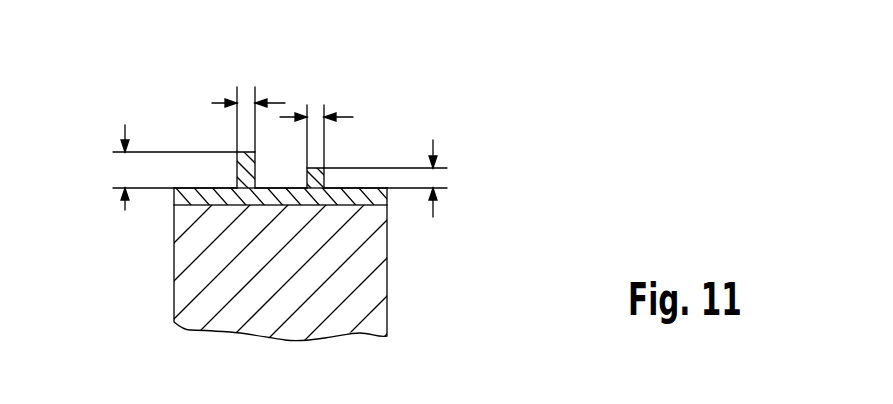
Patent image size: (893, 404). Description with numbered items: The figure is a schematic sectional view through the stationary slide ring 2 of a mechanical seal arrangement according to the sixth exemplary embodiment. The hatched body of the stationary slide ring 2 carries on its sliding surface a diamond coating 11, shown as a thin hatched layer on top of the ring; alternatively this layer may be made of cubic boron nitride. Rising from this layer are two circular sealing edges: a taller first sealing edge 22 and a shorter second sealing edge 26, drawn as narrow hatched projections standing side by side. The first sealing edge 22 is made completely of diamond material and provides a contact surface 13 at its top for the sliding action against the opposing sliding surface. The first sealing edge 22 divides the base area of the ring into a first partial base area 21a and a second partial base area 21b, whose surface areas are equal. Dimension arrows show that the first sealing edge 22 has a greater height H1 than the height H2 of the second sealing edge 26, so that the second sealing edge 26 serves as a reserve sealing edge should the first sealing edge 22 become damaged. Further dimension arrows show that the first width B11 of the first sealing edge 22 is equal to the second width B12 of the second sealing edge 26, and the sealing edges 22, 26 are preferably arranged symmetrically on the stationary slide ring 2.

The stationary slide ring 2 is at (380, 293).
The diamond coating 11 is at (381, 197).
The contact surface 13 is at (250, 93).
The first sealing edge 22 is at (242, 167).
The second sealing edge 26 is at (313, 177).
The first partial base area 21a is at (362, 187).
The second partial base area 21b is at (197, 187).
The first width B11 is at (243, 95).
The second width B12 is at (315, 113).
The height of the first sealing edge H1 is at (128, 172).
The height of the second sealing edge H2 is at (435, 179).